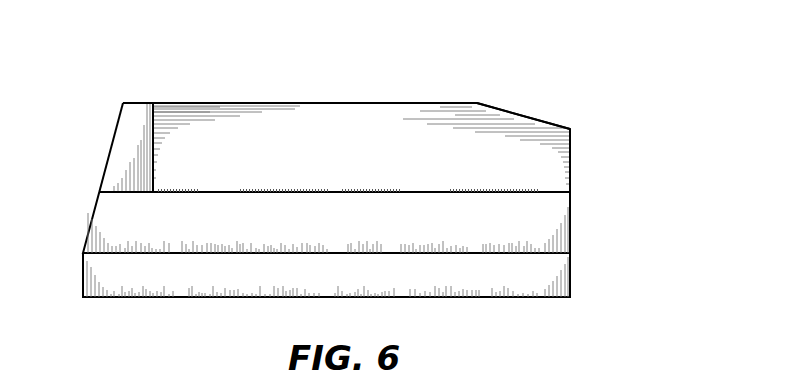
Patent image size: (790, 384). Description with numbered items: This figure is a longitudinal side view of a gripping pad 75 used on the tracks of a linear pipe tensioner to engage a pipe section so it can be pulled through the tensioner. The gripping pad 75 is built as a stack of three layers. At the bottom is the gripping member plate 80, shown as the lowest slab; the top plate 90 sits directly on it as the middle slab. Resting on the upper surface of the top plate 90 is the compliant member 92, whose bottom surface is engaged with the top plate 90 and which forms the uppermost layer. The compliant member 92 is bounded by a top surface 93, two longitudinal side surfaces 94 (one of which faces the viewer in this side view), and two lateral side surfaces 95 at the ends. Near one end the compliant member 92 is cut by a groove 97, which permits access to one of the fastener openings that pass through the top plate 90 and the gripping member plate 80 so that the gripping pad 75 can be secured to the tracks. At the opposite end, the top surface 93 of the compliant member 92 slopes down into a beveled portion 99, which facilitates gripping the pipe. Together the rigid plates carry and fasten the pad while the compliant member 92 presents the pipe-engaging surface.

The gripping pad 75 is at (611, 49).
The gripping member plate 80 is at (572, 277).
The top plate 90 is at (572, 223).
The compliant member 92 is at (225, 137).
The top surface 93 is at (335, 103).
The longitudinal side surface 94 is at (341, 160).
The lateral side surface 95 is at (108, 160).
The groove 97 is at (152, 122).
The beveled portion 99 is at (520, 115).